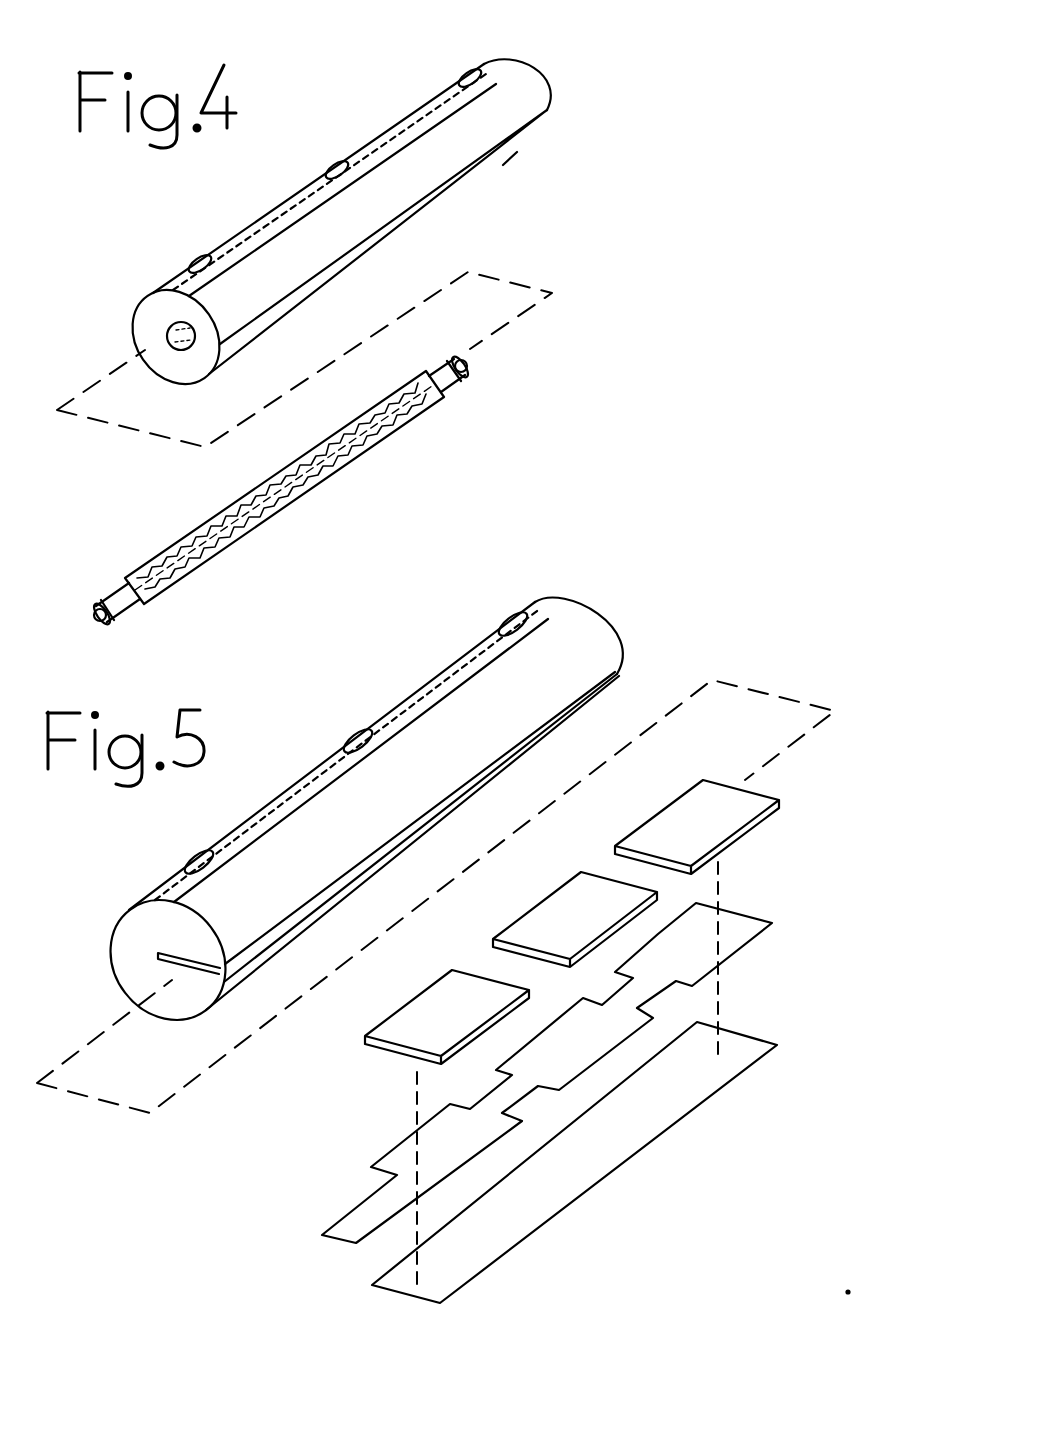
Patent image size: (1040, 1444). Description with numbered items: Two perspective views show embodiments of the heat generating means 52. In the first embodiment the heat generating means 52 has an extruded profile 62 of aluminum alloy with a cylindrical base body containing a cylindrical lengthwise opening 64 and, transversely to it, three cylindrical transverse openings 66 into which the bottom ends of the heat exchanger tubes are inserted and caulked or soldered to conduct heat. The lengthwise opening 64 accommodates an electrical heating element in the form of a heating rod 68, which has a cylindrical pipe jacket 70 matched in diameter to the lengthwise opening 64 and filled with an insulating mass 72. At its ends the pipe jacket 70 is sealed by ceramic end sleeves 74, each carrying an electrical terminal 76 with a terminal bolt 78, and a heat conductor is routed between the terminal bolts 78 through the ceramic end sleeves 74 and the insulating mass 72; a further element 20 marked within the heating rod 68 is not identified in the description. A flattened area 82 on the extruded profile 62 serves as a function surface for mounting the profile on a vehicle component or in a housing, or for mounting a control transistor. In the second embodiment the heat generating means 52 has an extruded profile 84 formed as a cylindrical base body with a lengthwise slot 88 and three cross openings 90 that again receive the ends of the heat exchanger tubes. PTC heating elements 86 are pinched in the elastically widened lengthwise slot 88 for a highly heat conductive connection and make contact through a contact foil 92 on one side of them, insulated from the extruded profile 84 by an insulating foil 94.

In FIG. 4, the optical fiber 20 is at (348, 468).
In FIG. 4, the heat generating means 52 is at (150, 262).
In FIG. 5, the heat generating means 52 is at (120, 885).
In FIG. 4, the extruded profile 62 is at (533, 82).
In FIG. 4, the lengthwise opening 64 is at (173, 345).
In FIG. 4, the transverse openings 66 is at (464, 72).
In FIG. 4, the heating rod 68 is at (402, 446).
In FIG. 4, the pipe jacket 70 is at (283, 512).
In FIG. 4, the insulating mass 72 is at (240, 528).
In FIG. 4, the ceramic end sleeves 74 is at (456, 404).
In FIG. 4, the electrical terminal 76 is at (478, 400).
In FIG. 4, the terminal bolts 78 is at (474, 358).
In FIG. 4, the flattened area 82 is at (505, 158).
In FIG. 5, the extruded profile 84 is at (604, 622).
In FIG. 5, the PTC heating elements 86 is at (705, 824).
In FIG. 5, the lengthwise slot 88 is at (222, 971).
In FIG. 5, the cross openings 90 is at (507, 620).
In FIG. 5, the contact foil 92 is at (747, 940).
In FIG. 5, the insulating foil 94 is at (762, 1034).